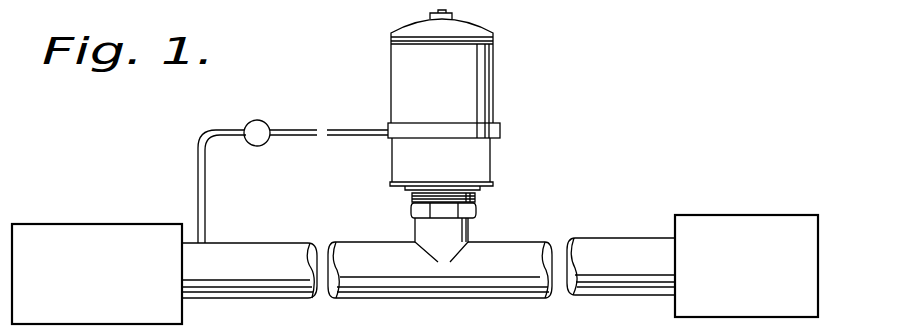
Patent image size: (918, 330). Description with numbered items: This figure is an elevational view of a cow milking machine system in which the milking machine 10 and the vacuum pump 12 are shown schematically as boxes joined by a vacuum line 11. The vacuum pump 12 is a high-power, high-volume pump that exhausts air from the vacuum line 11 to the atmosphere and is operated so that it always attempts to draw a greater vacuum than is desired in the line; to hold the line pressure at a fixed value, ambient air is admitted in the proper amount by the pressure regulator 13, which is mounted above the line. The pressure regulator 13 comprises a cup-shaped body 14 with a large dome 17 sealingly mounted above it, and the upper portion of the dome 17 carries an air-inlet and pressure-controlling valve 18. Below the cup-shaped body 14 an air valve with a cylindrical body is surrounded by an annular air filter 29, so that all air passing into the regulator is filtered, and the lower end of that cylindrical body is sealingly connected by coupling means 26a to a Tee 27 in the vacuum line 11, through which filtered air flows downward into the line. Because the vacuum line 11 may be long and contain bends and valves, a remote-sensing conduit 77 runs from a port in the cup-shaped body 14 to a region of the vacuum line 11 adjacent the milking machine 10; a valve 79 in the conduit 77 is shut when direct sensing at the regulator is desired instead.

The milking machine 10 is at (125, 224).
The vacuum line 11 is at (606, 214).
The vacuum pump 12 is at (713, 215).
The pressure regulator 13 is at (534, 88).
The cup-shaped body 14 is at (500, 131).
The dome 17 is at (485, 36).
The air-inlet and pressure-controlling valve 18 is at (440, 17).
The coupling means 26a is at (412, 211).
The Tee 27 is at (470, 229).
The annular air filter 29 is at (485, 168).
The conduit 77 is at (296, 137).
The valve 79 is at (267, 124).